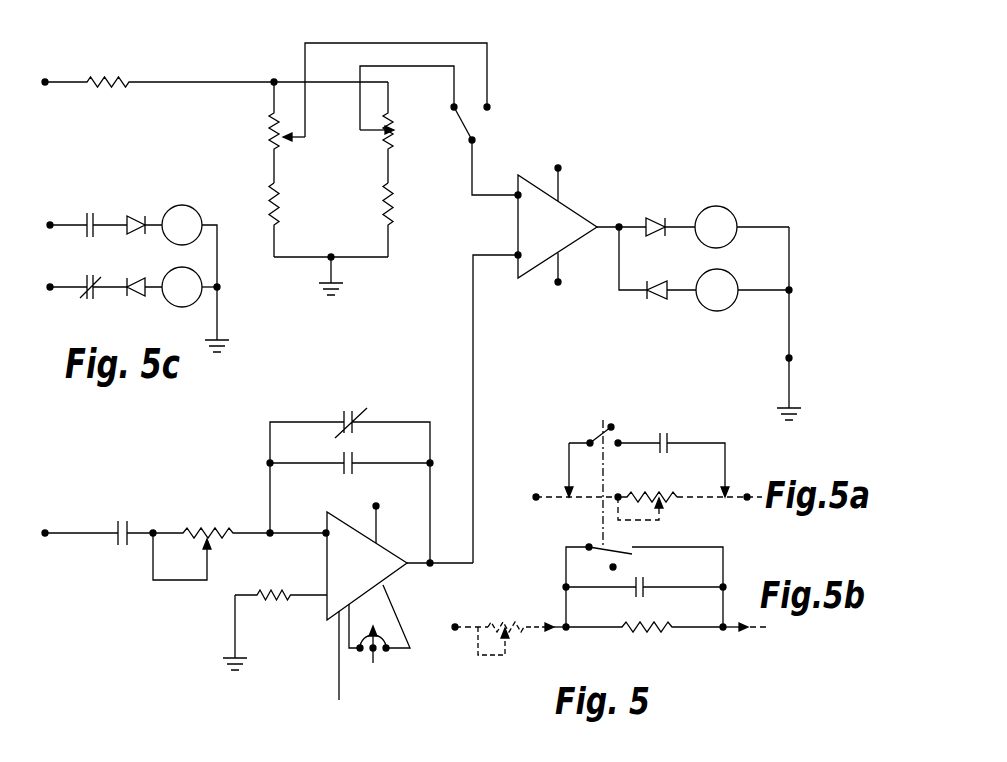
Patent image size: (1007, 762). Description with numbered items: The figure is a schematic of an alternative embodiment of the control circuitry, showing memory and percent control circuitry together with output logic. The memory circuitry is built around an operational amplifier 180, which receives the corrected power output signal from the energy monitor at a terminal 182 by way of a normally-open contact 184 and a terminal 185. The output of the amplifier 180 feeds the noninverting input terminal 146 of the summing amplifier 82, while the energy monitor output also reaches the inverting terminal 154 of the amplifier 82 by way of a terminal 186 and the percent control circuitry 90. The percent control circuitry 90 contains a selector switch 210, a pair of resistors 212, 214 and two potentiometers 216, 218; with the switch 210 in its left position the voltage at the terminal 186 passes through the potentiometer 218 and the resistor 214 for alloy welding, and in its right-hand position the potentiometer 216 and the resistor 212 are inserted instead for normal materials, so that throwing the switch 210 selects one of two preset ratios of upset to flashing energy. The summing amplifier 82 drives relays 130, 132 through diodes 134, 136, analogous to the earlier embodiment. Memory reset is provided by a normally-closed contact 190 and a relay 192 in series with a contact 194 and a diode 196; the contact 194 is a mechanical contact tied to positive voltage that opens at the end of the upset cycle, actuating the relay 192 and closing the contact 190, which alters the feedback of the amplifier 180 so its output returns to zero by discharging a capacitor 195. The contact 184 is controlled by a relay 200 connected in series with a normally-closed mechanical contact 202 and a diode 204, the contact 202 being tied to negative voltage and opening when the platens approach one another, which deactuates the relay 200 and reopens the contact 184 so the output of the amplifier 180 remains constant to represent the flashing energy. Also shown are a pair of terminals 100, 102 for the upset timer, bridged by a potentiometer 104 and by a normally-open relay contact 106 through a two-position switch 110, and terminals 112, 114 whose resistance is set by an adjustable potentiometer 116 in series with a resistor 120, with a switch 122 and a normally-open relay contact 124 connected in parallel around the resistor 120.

In FIG. 5, the summing amplifier 82 is at (545, 187).
In FIG. 5, the percent control circuitry 90 is at (339, 190).
In FIG. 5A, the terminal 100 is at (565, 509).
In FIG. 5A, the terminal 102 is at (724, 508).
In FIG. 5A, the potentiometer 104 is at (665, 501).
In FIG. 5A, the normally-open relay contact 106 is at (666, 432).
In FIG. 5A, the two-position switch 110 is at (601, 438).
In FIG. 5B, the terminal 112 is at (464, 638).
In FIG. 5B, the terminal 114 is at (741, 638).
In FIG. 5B, the adjustable potentiometer 116 is at (497, 624).
In FIG. 5B, the resistor 120 is at (629, 625).
In FIG. 5B, the switch 122 is at (621, 550).
In FIG. 5B, the normally-open relay contact 124 is at (641, 597).
In FIG. 5, the relay 130 is at (718, 206).
In FIG. 5, the relay 132 is at (703, 311).
In FIG. 5, the diode 134 is at (648, 215).
In FIG. 5, the diode 136 is at (658, 301).
In FIG. 5, the noninverting input terminal 146 is at (516, 258).
In FIG. 5, the inverting terminal 154 is at (516, 193).
In FIG. 5, the operational amplifier 180 is at (395, 575).
In FIG. 5, the terminal 182 is at (325, 530).
In FIG. 5, the normally-open contact 184 is at (118, 522).
In FIG. 5, the terminal 185 is at (45, 530).
In FIG. 5, the terminal 186 is at (45, 80).
In FIG. 5, the normally-closed contact 190 is at (350, 410).
In FIG. 5C, the relay 192 is at (190, 206).
In FIG. 5C, the contact 194 is at (89, 211).
In FIG. 5, the capacitor 195 is at (356, 460).
In FIG. 5C, the diode 196 is at (132, 213).
In FIG. 5C, the relay 200 is at (199, 303).
In FIG. 5C, the normally-closed mechanical contact 202 is at (92, 278).
In FIG. 5C, the diode 204 is at (137, 298).
In FIG. 5, the selector switch 210 is at (482, 115).
In FIG. 5, the resistor 212 is at (280, 208).
In FIG. 5, the resistor 214 is at (392, 213).
In FIG. 5, the potentiometer 216 is at (272, 120).
In FIG. 5, the potentiometer 218 is at (393, 141).